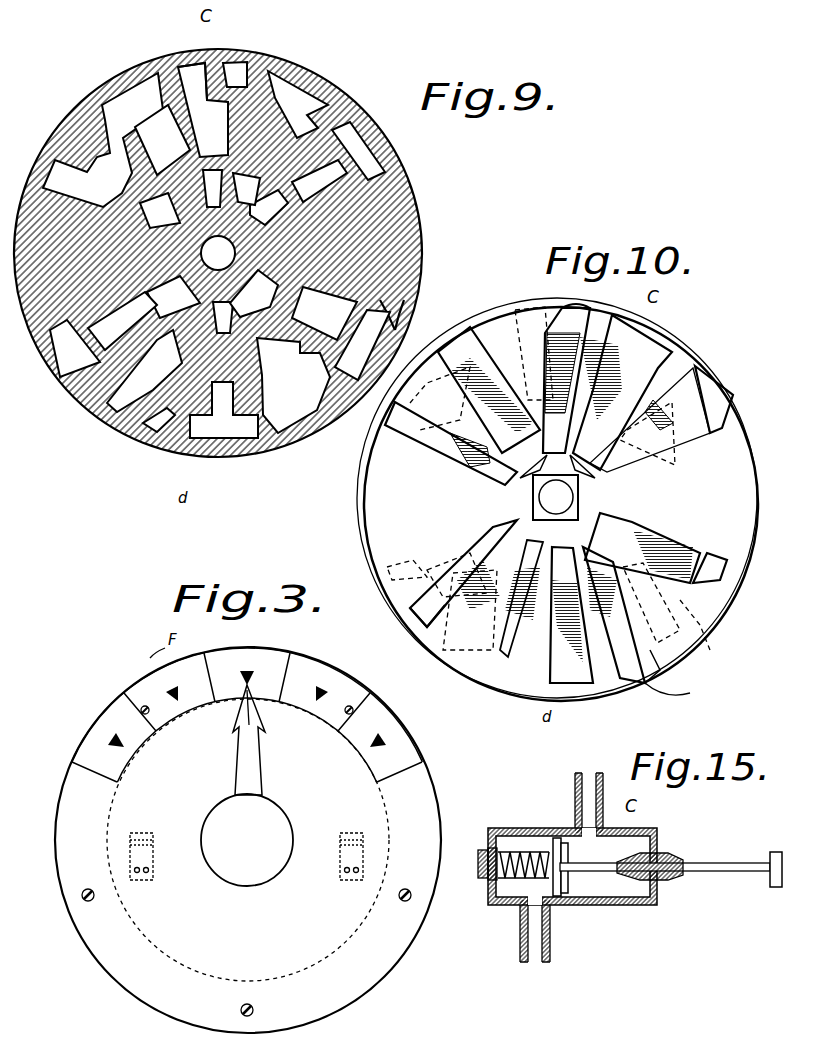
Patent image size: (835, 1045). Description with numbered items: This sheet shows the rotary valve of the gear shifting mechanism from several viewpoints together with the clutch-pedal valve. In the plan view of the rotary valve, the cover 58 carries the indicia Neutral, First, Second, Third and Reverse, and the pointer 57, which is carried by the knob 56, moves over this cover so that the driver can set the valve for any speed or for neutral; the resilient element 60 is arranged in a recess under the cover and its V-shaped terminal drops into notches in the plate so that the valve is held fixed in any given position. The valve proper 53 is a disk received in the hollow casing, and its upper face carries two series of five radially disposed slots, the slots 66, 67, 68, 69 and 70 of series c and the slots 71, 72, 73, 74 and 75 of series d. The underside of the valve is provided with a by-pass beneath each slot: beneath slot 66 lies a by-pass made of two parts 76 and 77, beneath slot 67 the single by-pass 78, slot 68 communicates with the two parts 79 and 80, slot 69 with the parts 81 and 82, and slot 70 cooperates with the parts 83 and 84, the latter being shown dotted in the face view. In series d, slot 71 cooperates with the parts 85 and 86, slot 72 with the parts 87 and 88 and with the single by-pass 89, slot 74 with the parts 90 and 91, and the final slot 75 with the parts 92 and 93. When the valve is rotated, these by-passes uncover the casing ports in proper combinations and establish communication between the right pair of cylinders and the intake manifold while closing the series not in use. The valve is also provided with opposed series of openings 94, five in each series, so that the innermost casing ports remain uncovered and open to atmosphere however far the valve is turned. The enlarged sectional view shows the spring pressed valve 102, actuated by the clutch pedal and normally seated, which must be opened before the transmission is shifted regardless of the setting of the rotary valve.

In FIG. 9, the valve proper 53 is at (420, 178).
In FIG. 10, the valve proper 53 is at (685, 329).
In FIG. 3, the knob 56 is at (272, 862).
In FIG. 3, the pointer 57 is at (252, 782).
In FIG. 3, the cover 58 is at (370, 980).
In FIG. 3, the resilient element 60 is at (125, 865).
In FIG. 10, the slot 66 is at (672, 410).
In FIG. 10, the slot 67 is at (640, 420).
In FIG. 10, the slot 68 is at (614, 340).
In FIG. 10, the slot 69 is at (512, 340).
In FIG. 10, the slot 70 is at (452, 455).
In FIG. 10, the slot 71 is at (687, 547).
In FIG. 10, the slot 72 is at (660, 688).
In FIG. 10, the slot 73 is at (600, 665).
In FIG. 10, the slot 74 is at (502, 660).
In FIG. 10, the slot 75 is at (413, 633).
In FIG. 9, the by-pass part 76 is at (360, 145).
In FIG. 10, the by-pass part 76 is at (722, 415).
In FIG. 9, the by-pass part 77 is at (306, 187).
In FIG. 10, the by-pass part 77 is at (673, 445).
In FIG. 9, the by-pass 78 is at (298, 100).
In FIG. 10, the by-pass 78 is at (643, 350).
In FIG. 9, the by-pass part 79 is at (208, 63).
In FIG. 10, the by-pass part 79 is at (562, 300).
In FIG. 9, the by-pass part 80 is at (233, 77).
In FIG. 10, the by-pass part 80 is at (585, 320).
In FIG. 9, the by-pass part 81 is at (143, 122).
In FIG. 10, the by-pass part 81 is at (492, 340).
In FIG. 9, the by-pass part 82 is at (192, 77).
In FIG. 10, the by-pass part 82 is at (554, 340).
In FIG. 9, the by-pass part 83 is at (53, 173).
In FIG. 10, the by-pass part 83 is at (418, 427).
In FIG. 9, the by-pass part 84 is at (83, 132).
In FIG. 10, the by-pass part 84 is at (433, 350).
In FIG. 9, the by-pass part 85 is at (400, 295).
In FIG. 10, the by-pass part 85 is at (727, 563).
In FIG. 9, the by-pass part 86 is at (410, 272).
In FIG. 10, the by-pass part 86 is at (733, 620).
In FIG. 9, the by-pass part 87 is at (340, 393).
In FIG. 10, the by-pass part 87 is at (703, 658).
In FIG. 9, the by-pass part 88 is at (292, 418).
In FIG. 10, the by-pass part 88 is at (650, 680).
In FIG. 9, the by-pass 89 is at (240, 430).
In FIG. 10, the by-pass 89 is at (567, 685).
In FIG. 9, the by-pass part 90 is at (160, 427).
In FIG. 10, the by-pass part 90 is at (492, 667).
In FIG. 9, the by-pass part 91 is at (125, 403).
In FIG. 10, the by-pass part 91 is at (447, 655).
In FIG. 9, the by-pass part 92 is at (110, 335).
In FIG. 10, the by-pass part 92 is at (457, 545).
In FIG. 9, the by-pass part 93 is at (72, 365).
In FIG. 10, the by-pass part 93 is at (410, 562).
In FIG. 9, the openings 94 is at (267, 212).
In FIG. 10, the openings 94 is at (527, 472).
In FIG. 15, the spring pressed valve 102 is at (626, 907).